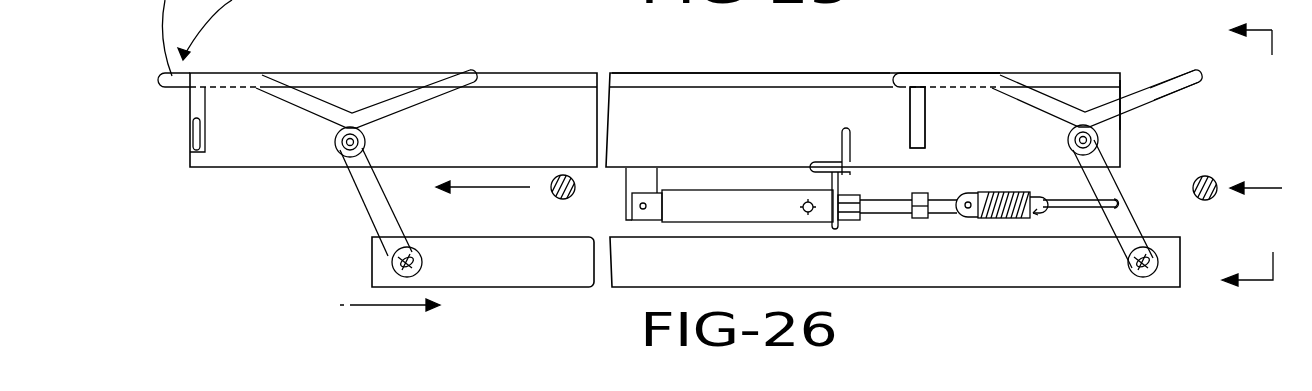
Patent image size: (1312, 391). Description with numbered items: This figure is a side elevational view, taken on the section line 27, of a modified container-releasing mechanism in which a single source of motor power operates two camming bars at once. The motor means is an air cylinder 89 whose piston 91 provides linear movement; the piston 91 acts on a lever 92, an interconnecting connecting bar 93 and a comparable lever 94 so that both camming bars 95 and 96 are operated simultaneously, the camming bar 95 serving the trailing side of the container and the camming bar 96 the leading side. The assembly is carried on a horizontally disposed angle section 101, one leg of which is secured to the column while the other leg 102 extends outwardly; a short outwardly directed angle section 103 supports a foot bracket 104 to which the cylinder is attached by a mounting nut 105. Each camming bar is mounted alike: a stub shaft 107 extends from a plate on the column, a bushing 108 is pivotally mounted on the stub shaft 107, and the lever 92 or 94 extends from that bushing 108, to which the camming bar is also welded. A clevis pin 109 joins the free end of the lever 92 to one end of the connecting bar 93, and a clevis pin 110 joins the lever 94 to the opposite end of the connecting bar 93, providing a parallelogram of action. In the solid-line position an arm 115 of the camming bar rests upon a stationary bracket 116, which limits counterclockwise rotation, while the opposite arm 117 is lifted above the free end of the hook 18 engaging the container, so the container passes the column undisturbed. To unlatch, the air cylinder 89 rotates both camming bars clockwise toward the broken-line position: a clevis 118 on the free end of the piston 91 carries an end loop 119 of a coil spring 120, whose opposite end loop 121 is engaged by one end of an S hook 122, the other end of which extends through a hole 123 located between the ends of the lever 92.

The hook 18 is at (553, 192).
The section line 27 is at (1253, 155).
The air cylinder 89 is at (712, 207).
The piston 91 is at (890, 207).
The lever 92 is at (1130, 237).
The connecting bar 93 is at (1060, 278).
The lever 94 is at (375, 200).
The camming bar 95 is at (1088, 112).
The camming bar 96 is at (352, 114).
The angle section 101 is at (718, 78).
The leg 102 is at (635, 82).
The angle section 103 is at (830, 160).
The foot bracket 104 is at (852, 172).
The mounting nut 105 is at (920, 215).
The stub shaft 107 is at (342, 152).
The bushing 108 is at (1120, 130).
The clevis pin 109 is at (1148, 270).
The clevis pin 110 is at (392, 263).
The arm 115 is at (928, 86).
The bracket 116 is at (190, 147).
The arm 117 is at (1167, 82).
The clevis 118 is at (942, 198).
The end loop 119 is at (972, 220).
The coil spring 120 is at (1013, 220).
The end loop 121 is at (1045, 196).
The S hook 122 is at (1077, 224).
The hole 123 is at (1116, 207).